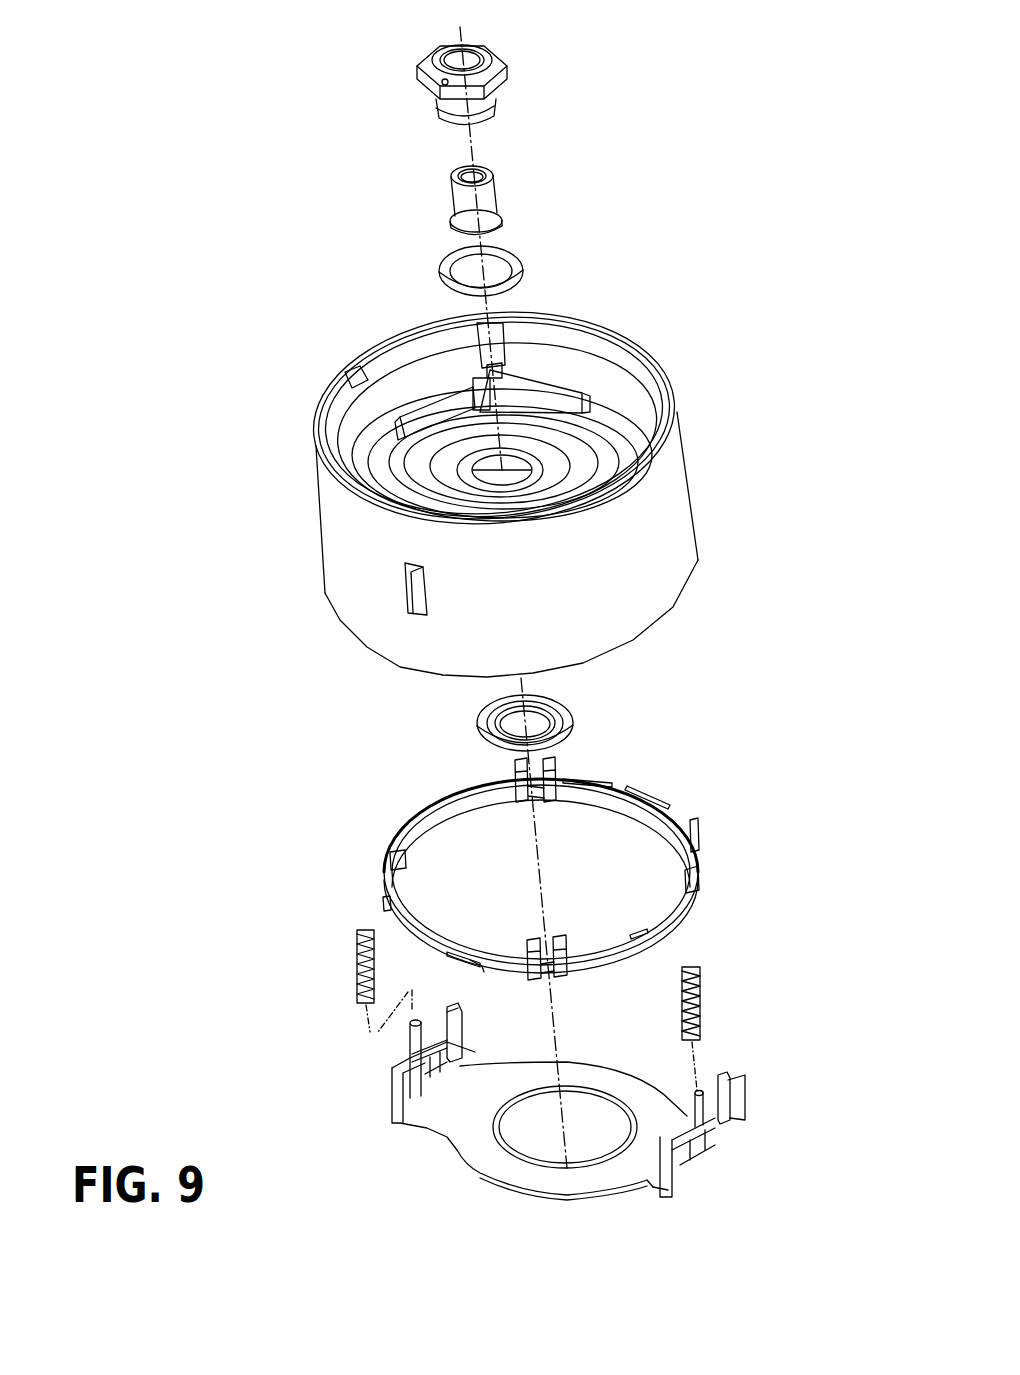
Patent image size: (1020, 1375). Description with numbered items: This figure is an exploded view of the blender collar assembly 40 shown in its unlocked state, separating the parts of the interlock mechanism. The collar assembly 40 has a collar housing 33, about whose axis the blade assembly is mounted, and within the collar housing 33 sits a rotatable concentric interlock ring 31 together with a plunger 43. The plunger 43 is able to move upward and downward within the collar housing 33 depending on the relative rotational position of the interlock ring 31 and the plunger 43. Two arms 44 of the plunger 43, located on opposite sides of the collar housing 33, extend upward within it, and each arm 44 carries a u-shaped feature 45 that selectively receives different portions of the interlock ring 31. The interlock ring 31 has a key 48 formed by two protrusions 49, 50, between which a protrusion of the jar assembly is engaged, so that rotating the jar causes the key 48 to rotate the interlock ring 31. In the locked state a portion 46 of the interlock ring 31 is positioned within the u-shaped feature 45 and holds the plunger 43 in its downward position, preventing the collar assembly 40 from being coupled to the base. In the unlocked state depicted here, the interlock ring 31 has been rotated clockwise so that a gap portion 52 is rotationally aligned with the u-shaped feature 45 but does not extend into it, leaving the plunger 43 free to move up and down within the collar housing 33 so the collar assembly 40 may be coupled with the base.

The collar assembly 40 is at (164, 114).
The collar housing 33 is at (625, 353).
The key 48 is at (566, 748).
The interlock ring 31 is at (410, 818).
The portion 46 is at (385, 912).
The protrusion 49 is at (513, 768).
The protrusion 50 is at (557, 760).
The gap portion 52 is at (466, 938).
The arm 44 is at (375, 1040).
The u-shaped feature 45 is at (672, 1124).
The plunger 43 is at (475, 1153).